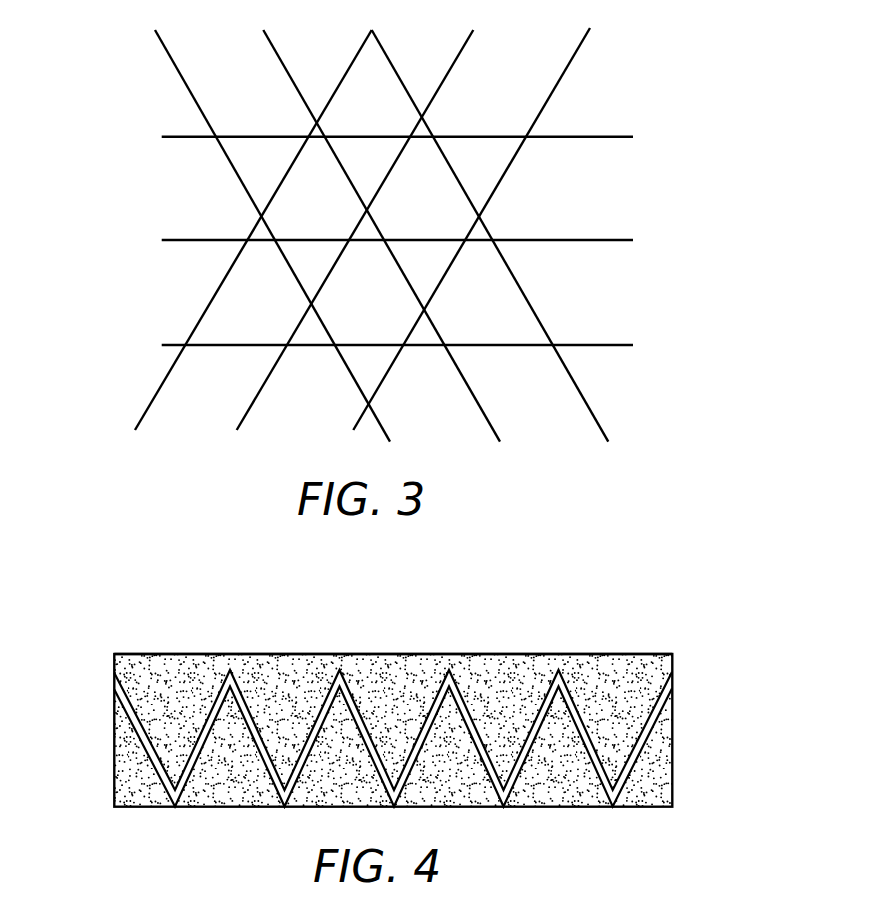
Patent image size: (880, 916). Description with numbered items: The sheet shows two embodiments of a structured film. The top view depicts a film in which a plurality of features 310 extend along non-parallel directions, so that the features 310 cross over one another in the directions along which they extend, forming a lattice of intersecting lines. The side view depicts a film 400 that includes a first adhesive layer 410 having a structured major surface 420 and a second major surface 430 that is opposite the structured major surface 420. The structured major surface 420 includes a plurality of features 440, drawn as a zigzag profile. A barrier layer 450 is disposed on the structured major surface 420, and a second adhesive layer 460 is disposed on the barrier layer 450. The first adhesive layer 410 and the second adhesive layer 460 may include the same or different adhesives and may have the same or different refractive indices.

In FIG. 3, the features 310 is at (490, 232).
In FIG. 4, the film 400 is at (398, 711).
In FIG. 4, the first adhesive layer 410 is at (648, 660).
In FIG. 4, the structured major surface 420 is at (648, 706).
In FIG. 4, the second major surface 430 is at (587, 654).
In FIG. 4, the features 440 is at (605, 728).
In FIG. 4, the barrier layer 450 is at (137, 717).
In FIG. 4, the second adhesive layer 460 is at (135, 777).